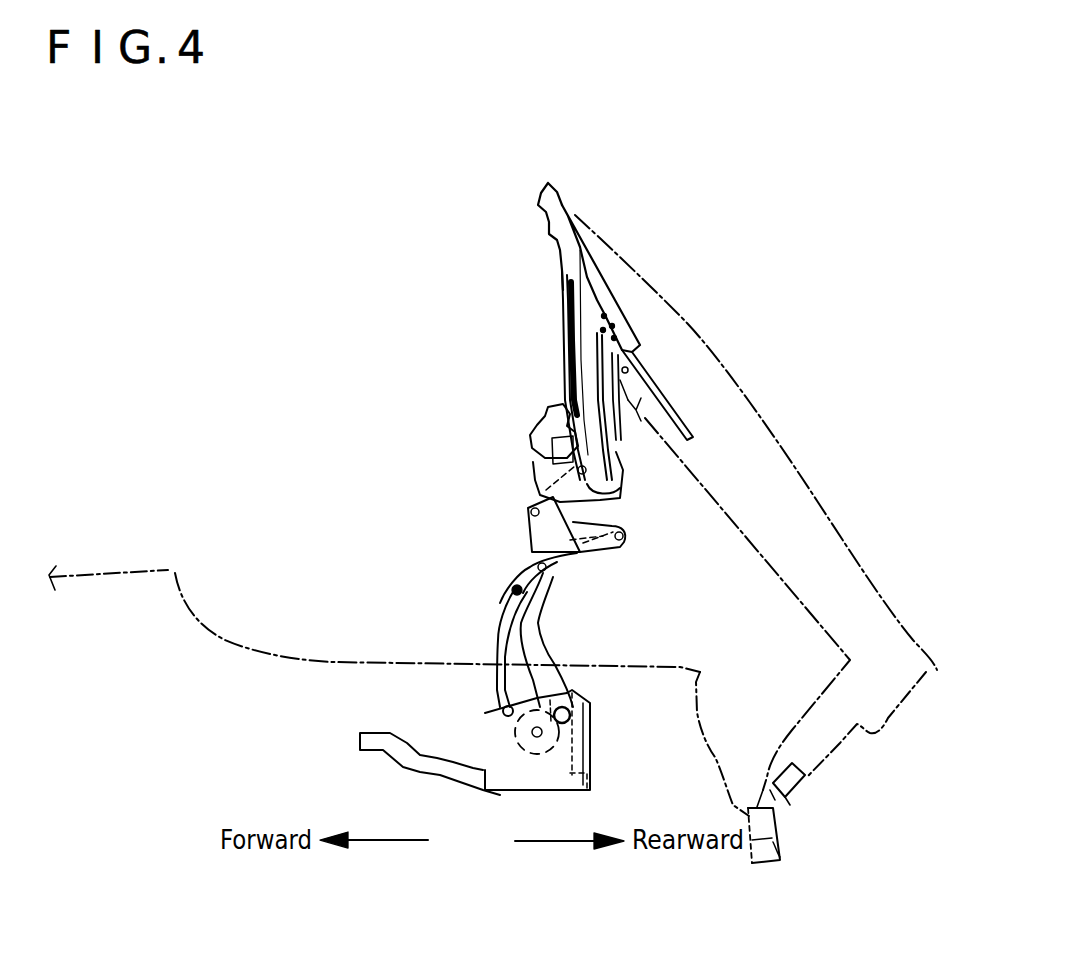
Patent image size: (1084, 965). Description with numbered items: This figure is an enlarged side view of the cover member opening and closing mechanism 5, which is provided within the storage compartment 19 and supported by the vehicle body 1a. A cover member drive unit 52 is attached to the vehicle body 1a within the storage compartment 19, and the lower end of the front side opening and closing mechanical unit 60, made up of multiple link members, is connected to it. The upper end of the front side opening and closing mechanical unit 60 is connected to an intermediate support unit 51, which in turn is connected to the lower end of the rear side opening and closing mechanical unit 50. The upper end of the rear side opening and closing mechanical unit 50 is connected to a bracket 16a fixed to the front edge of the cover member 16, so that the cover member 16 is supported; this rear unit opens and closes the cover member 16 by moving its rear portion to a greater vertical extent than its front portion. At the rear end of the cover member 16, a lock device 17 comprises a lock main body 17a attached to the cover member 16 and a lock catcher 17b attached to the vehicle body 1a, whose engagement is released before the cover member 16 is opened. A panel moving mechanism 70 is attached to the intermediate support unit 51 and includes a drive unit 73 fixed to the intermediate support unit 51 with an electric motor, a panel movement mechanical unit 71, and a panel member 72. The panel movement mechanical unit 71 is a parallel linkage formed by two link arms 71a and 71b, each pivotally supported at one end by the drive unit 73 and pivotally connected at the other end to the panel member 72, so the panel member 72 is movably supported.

The vehicle body 1a is at (153, 568).
The cover member opening and closing mechanism 5 is at (410, 424).
The cover member 16 is at (790, 460).
The bracket 16a is at (680, 400).
The lock device 17 is at (848, 833).
The lock main body 17a is at (800, 780).
The lock catcher 17b is at (838, 818).
The storage compartment 19 is at (285, 637).
The rear side opening and closing mechanical unit 50 is at (653, 397).
The intermediate support unit 51 is at (540, 466).
The cover member drive unit 52 is at (497, 746).
The front side opening and closing mechanical unit 60 is at (494, 591).
The panel moving mechanism 70 is at (494, 379).
The panel movement mechanical unit 71 is at (516, 382).
The link arm 71a is at (565, 333).
The link arm 71b is at (600, 372).
The panel member 72 is at (568, 206).
The drive unit 73 is at (530, 436).